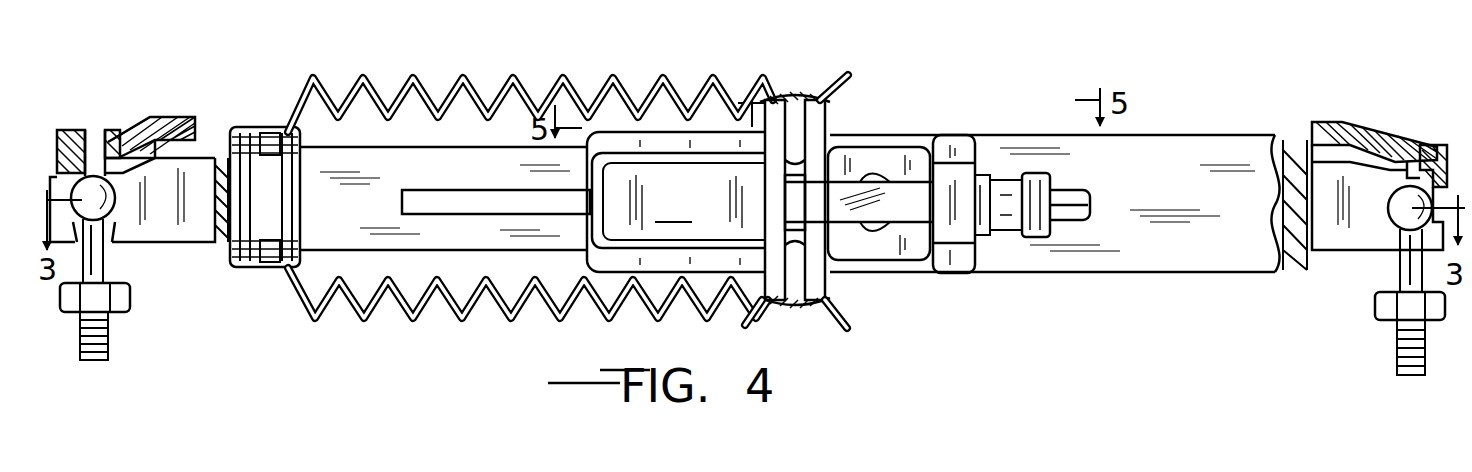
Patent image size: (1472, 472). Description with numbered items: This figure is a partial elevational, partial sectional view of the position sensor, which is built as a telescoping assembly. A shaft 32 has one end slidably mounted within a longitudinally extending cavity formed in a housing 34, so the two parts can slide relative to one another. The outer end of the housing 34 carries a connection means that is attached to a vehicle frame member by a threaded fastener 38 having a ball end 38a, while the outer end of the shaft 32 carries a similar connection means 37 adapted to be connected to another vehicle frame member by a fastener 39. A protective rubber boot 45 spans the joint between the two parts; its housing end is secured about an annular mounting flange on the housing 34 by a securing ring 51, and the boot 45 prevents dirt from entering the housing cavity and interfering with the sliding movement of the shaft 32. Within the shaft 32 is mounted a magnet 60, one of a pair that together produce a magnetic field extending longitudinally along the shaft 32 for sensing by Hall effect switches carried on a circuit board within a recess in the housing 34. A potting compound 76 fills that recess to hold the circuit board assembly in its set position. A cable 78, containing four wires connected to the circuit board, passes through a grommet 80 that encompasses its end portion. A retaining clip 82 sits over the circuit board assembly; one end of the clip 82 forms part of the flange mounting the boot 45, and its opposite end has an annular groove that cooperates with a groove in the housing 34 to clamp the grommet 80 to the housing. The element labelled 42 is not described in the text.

The shaft 32 is at (219, 156).
The housing 34 is at (1142, 133).
The connection means 37 is at (100, 116).
The threaded fastener 38 is at (1380, 303).
The ball end 38a is at (1410, 186).
The fastener 39 is at (130, 288).
The end fitting 42 is at (1366, 124).
The protective rubber boot 45 is at (505, 76).
The securing ring 51 is at (788, 96).
The magnet 60 is at (483, 192).
The potting compound 76 is at (857, 160).
The cable 78 is at (1088, 192).
The grommet 80 is at (1035, 174).
The retaining clip 82 is at (848, 236).